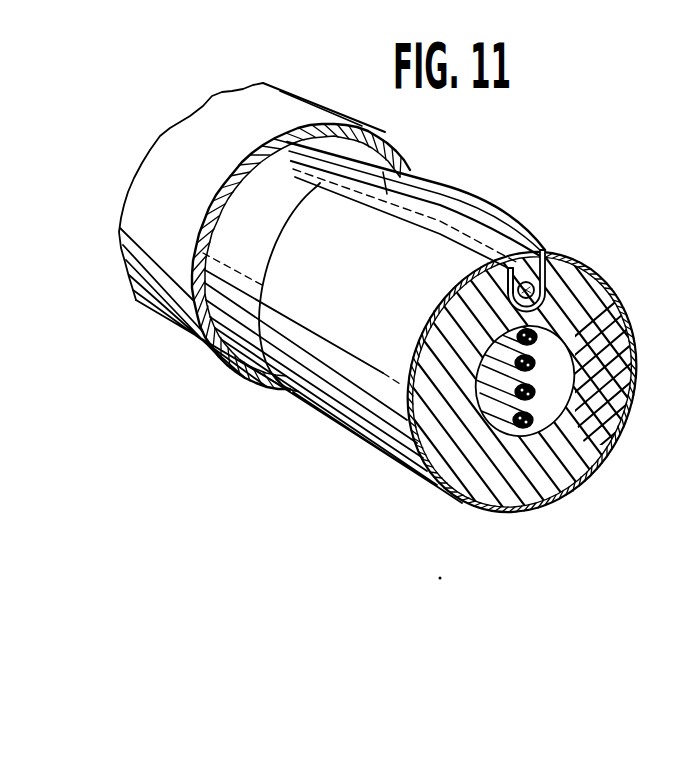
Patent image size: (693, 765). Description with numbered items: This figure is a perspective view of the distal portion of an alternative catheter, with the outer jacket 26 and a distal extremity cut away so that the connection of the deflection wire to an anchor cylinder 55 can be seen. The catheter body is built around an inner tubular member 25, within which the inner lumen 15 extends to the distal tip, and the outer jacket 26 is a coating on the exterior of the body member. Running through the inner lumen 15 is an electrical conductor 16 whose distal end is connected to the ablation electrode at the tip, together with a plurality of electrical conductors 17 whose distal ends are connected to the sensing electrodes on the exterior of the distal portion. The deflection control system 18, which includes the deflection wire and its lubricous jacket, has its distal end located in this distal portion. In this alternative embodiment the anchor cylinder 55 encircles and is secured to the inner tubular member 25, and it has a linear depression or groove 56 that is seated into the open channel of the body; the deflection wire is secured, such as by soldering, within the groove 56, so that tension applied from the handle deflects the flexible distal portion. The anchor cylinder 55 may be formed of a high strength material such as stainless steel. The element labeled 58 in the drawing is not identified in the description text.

The inner lumen 15 is at (552, 402).
The electrical conductor 16 is at (565, 437).
The electrical conductors 17 is at (545, 358).
The deflection control system 18 is at (506, 286).
The inner tubular member 25 is at (440, 437).
The outer jacket 26 is at (172, 320).
The anchor cylinder 55 is at (512, 218).
The groove 56 is at (547, 256).
The bead 58 is at (548, 290).